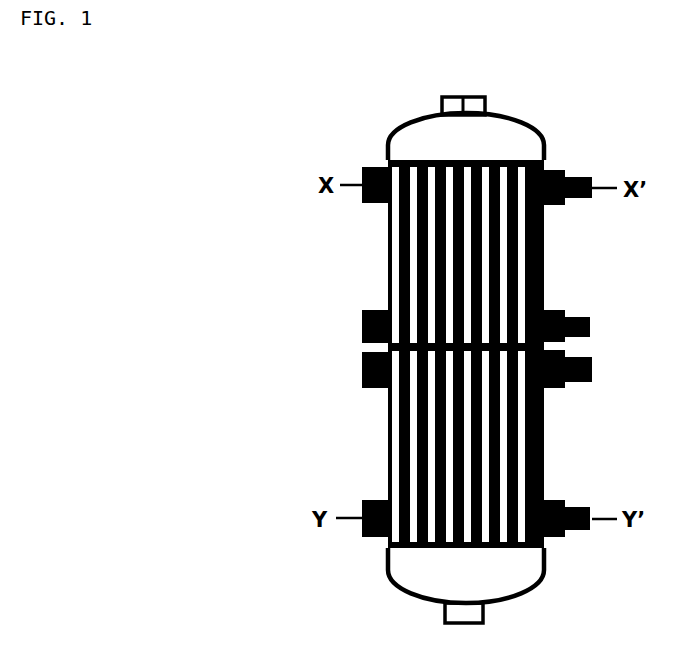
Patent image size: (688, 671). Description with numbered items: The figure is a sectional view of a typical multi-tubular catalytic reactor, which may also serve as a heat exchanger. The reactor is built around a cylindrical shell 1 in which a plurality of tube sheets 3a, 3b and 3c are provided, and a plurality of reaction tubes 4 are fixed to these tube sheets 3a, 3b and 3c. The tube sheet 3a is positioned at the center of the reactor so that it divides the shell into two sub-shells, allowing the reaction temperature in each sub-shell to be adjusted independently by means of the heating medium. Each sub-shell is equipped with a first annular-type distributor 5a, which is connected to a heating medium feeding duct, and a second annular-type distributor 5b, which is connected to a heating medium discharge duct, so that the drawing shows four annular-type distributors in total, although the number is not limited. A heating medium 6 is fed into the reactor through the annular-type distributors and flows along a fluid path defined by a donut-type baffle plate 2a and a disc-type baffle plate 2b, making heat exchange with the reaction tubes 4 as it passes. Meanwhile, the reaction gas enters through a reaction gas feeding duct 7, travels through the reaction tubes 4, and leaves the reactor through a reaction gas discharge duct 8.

The cylindrical shell 1 is at (542, 262).
The donut-type baffle plate 2a is at (545, 478).
The disc-type baffle plate 2b is at (392, 266).
The tube sheet 3a is at (362, 370).
The tube sheet 3b is at (390, 159).
The tube sheet 3c is at (392, 548).
The reaction tubes 4 is at (542, 440).
The first annular-type distributor 5a is at (578, 322).
The second annular-type distributor 5b is at (578, 175).
The heating medium 6 is at (392, 452).
The reaction gas feeding duct 7 is at (460, 612).
The reaction gas discharge duct 8 is at (467, 99).